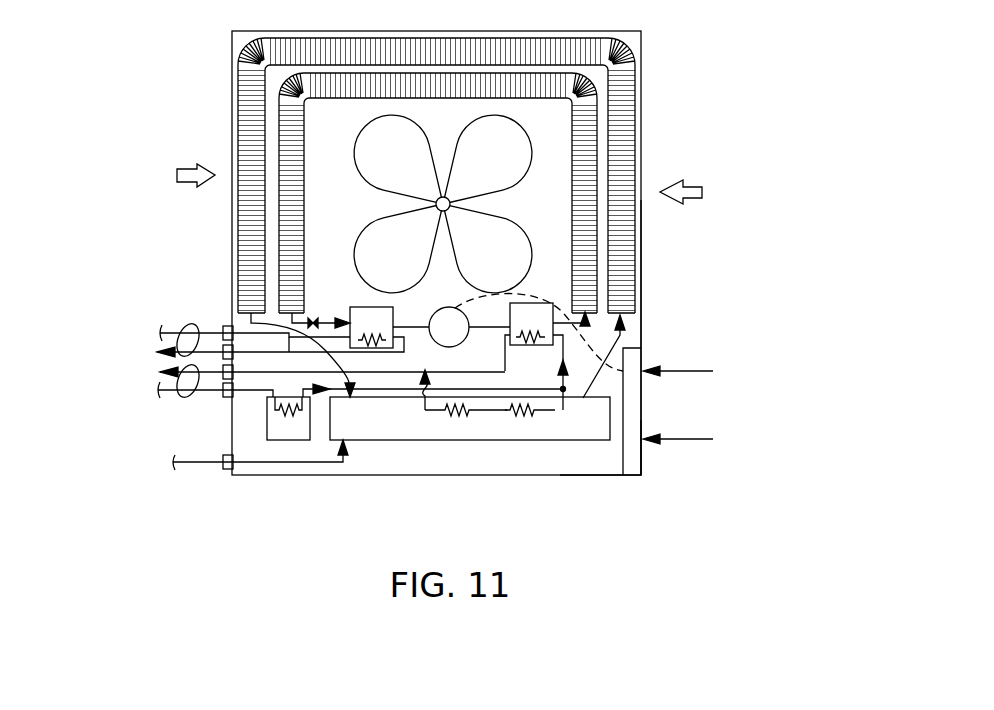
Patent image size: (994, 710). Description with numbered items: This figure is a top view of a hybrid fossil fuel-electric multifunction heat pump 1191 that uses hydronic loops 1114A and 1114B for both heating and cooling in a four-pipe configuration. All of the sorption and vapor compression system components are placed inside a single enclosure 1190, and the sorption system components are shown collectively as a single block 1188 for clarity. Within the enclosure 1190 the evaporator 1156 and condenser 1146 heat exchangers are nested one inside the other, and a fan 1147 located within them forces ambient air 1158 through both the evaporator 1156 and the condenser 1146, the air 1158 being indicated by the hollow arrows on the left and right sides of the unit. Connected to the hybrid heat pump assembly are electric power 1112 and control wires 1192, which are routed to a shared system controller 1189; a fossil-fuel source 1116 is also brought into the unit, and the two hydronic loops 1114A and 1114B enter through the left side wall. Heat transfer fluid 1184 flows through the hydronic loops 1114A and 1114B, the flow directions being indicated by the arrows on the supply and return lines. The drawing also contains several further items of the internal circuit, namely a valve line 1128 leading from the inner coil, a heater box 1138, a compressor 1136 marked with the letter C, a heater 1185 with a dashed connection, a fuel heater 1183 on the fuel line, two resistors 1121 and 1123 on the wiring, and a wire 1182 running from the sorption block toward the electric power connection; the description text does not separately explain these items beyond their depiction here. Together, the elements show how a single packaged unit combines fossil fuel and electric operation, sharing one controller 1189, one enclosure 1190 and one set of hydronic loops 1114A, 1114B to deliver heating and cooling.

The hybrid fossil fuel-electric multifunction heat pump 1191 is at (198, 85).
The single enclosure 1190 is at (641, 298).
The shared system controller 1189 is at (641, 462).
The evaporator heat exchanger 1156 is at (627, 148).
The condenser heat exchanger 1146 is at (588, 130).
The fan 1147 is at (487, 180).
The ambient air 1158 is at (177, 177).
The expansion valve line 1128 is at (313, 318).
The heater box 1138 is at (370, 307).
The compressor 1136 is at (449, 307).
The heater 1185 is at (540, 298).
The hydronic loop 1114B is at (196, 324).
The hydronic loop 1114A is at (180, 398).
The heat transfer fluid 1184 is at (135, 333).
The fossil-fuel source 1116 is at (153, 462).
The fuel heater 1183 is at (292, 441).
The sorption system components 1188 is at (350, 427).
The resistor 1121 is at (460, 412).
The resistor 1123 is at (520, 412).
The wire 1182 is at (583, 400).
The electric power 1112 is at (686, 368).
The control wires 1192 is at (665, 438).